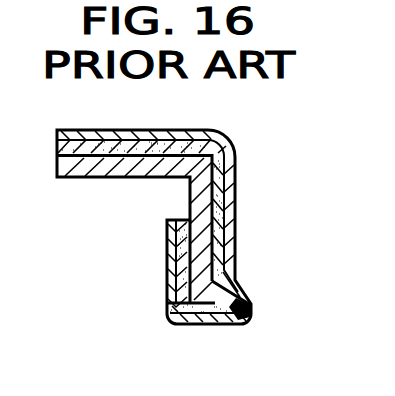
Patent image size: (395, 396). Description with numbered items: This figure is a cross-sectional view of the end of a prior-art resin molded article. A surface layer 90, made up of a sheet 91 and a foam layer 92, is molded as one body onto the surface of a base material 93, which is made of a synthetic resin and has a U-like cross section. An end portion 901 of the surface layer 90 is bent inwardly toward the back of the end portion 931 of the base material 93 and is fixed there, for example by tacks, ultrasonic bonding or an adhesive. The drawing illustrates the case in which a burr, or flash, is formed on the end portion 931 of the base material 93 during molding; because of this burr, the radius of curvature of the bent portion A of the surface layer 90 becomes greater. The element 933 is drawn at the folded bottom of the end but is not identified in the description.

The surface layer 90 is at (180, 130).
The sheet 91 is at (236, 163).
The foam layer 92 is at (220, 204).
The base material 93 is at (119, 178).
The end portion of the surface layer 901 is at (172, 268).
The end portion of the base material 931 is at (170, 296).
The folded bottom portion 933 is at (219, 322).
The bent portion A is at (254, 300).